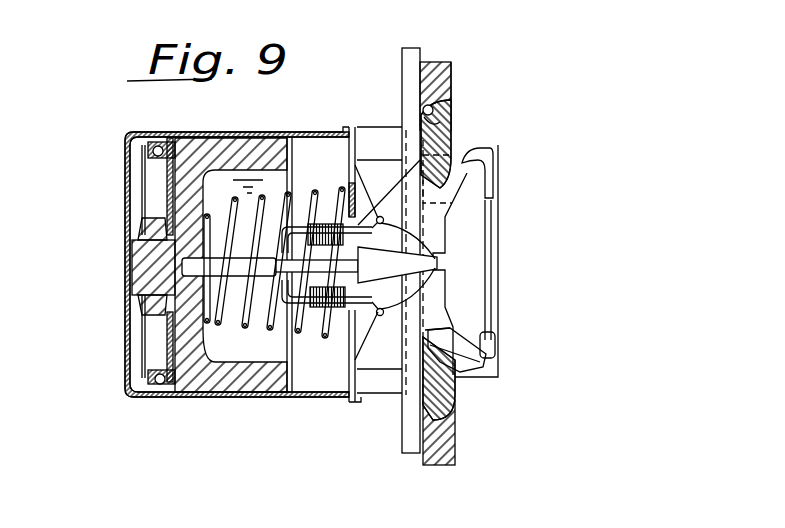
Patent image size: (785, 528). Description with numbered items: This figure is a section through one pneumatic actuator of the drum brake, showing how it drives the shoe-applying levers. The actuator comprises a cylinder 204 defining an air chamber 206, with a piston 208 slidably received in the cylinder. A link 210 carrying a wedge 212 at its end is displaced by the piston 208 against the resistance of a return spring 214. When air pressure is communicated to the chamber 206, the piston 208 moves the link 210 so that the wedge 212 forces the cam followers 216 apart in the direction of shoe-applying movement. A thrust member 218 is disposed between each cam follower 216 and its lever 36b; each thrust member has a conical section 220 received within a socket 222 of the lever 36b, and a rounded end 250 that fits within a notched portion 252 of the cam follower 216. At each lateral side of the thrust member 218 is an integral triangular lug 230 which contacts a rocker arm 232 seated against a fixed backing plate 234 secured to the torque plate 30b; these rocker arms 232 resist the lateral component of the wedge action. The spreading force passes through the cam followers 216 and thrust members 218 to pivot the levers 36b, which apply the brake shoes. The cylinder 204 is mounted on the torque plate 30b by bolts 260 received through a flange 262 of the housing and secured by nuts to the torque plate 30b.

The torque plate 30b is at (417, 440).
The lever 36b is at (447, 72).
The cylinder 204 is at (160, 397).
The air chamber 206 is at (140, 347).
The piston 208 is at (233, 380).
The link 210 is at (243, 263).
The wedge 212 is at (420, 248).
The return spring 214 is at (305, 205).
The cam follower 216 is at (433, 218).
The thrust member 218 is at (450, 137).
The conical section 220 is at (423, 113).
The socket 222 is at (450, 93).
The triangular lug 230 is at (433, 340).
The rocker arm 232 is at (473, 357).
The backing plate 234 is at (495, 338).
The rounded end 250 is at (450, 155).
The notched portion 252 is at (433, 195).
The bolt 260 is at (378, 385).
The flange 262 is at (342, 397).